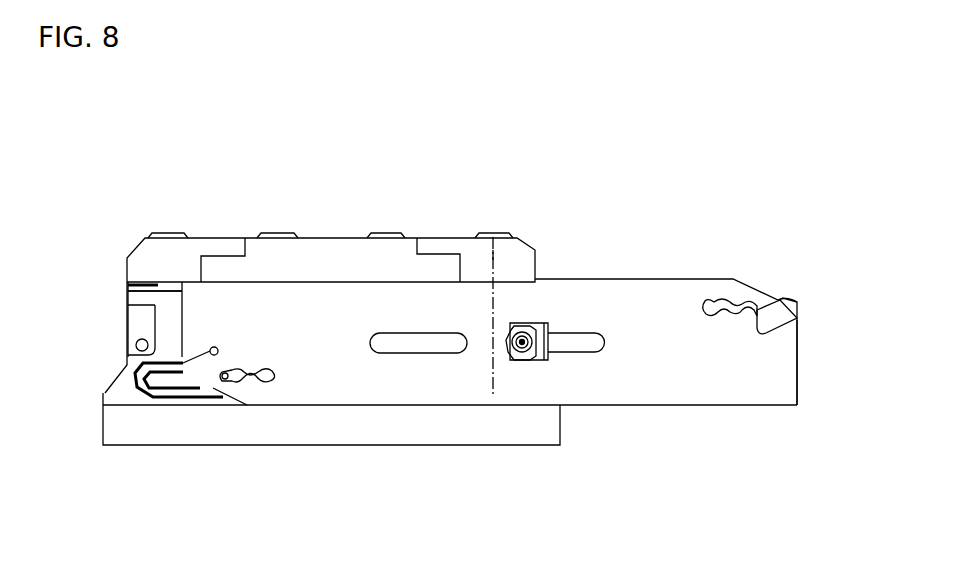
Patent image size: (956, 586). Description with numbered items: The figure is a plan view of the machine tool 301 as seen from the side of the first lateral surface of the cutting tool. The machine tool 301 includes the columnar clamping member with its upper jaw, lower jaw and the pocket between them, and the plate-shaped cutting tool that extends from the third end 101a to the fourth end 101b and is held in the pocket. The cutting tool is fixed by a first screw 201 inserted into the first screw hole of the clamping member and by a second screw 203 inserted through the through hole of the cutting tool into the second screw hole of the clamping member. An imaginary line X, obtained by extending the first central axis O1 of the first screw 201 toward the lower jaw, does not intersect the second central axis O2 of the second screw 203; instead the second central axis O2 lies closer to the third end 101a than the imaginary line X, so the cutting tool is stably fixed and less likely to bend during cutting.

The machine tool 301 is at (208, 170).
The first screw 201 is at (163, 235).
The third end 101a is at (797, 405).
The fourth end 101b is at (182, 332).
The second screw 203 is at (528, 360).
The first central axis O1 is at (497, 255).
The second central axis O2 is at (537, 360).
The imaginary line X is at (462, 440).